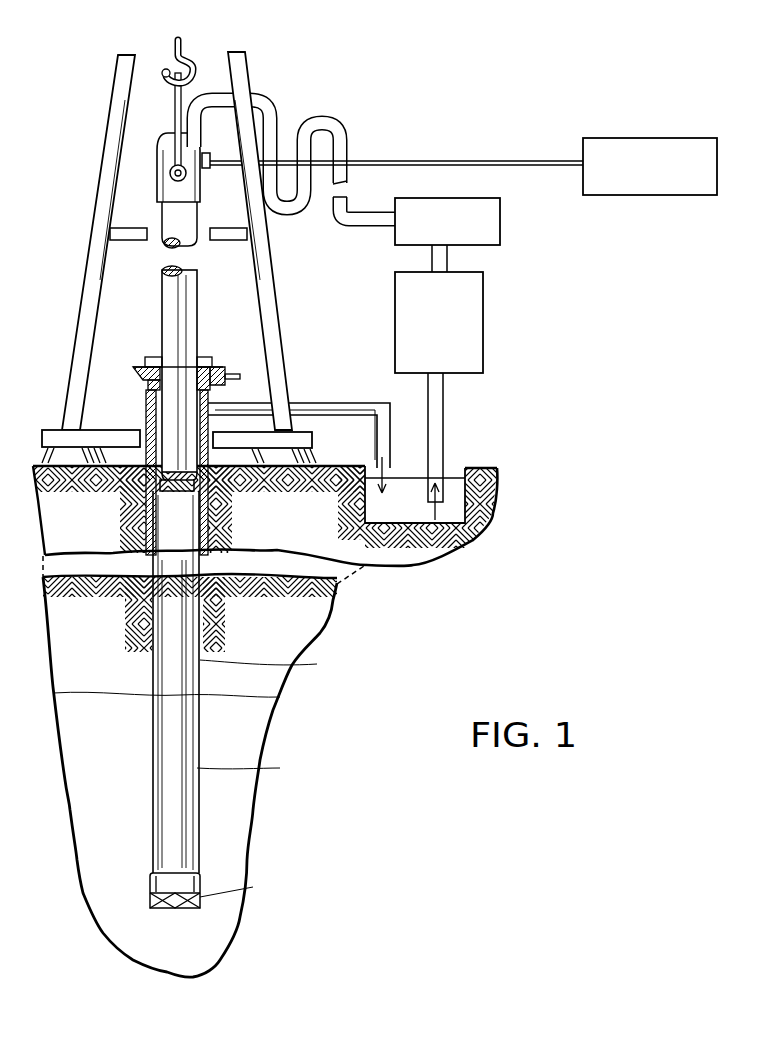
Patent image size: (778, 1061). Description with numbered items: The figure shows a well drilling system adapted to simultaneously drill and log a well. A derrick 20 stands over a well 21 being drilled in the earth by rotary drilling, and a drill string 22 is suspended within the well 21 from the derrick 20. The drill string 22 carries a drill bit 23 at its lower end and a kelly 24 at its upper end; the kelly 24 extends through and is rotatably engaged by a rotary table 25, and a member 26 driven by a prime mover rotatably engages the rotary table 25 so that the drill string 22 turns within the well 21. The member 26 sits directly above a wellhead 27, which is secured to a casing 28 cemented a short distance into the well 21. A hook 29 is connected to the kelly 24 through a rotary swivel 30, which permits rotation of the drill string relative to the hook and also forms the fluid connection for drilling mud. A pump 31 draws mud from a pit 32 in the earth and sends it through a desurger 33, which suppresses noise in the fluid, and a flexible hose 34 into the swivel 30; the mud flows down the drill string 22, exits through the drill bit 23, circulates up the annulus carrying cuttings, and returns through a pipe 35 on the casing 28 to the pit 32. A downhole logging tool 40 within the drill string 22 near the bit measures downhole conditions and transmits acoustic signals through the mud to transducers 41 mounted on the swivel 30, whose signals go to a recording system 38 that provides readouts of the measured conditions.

The derrick 20 is at (280, 303).
The well 21 is at (152, 815).
The drill string 22 is at (188, 665).
The drill bit 23 is at (153, 887).
The kelly 24 is at (198, 302).
The rotary table 25 is at (158, 357).
The member 26 is at (213, 360).
The wellhead 27 is at (147, 382).
The casing 28 is at (150, 412).
The hook 29 is at (188, 57).
The rotary swivel 30 is at (157, 173).
The pump 31 is at (484, 312).
The pit 32 is at (418, 516).
The desurger 33 is at (500, 216).
The flexible hose 34 is at (258, 103).
The pipe 35 is at (318, 402).
The recording system 38 is at (660, 138).
The downhole logging tool 40 is at (168, 740).
The transducers 41 is at (207, 170).